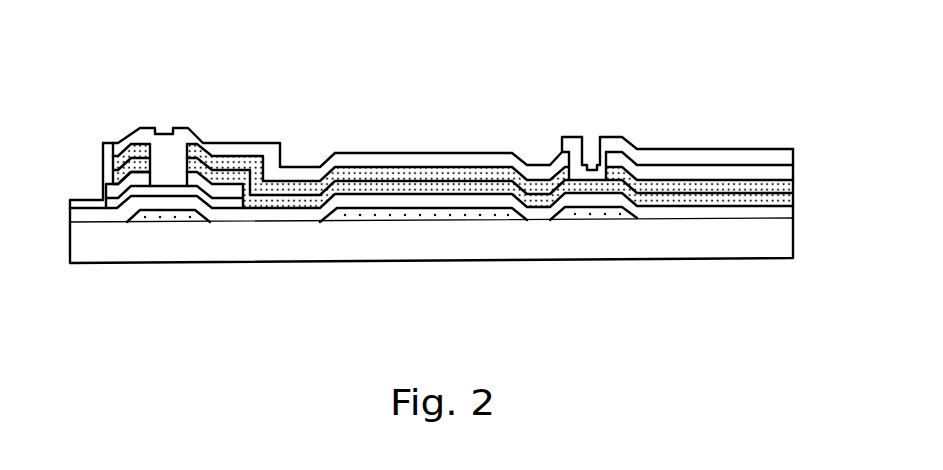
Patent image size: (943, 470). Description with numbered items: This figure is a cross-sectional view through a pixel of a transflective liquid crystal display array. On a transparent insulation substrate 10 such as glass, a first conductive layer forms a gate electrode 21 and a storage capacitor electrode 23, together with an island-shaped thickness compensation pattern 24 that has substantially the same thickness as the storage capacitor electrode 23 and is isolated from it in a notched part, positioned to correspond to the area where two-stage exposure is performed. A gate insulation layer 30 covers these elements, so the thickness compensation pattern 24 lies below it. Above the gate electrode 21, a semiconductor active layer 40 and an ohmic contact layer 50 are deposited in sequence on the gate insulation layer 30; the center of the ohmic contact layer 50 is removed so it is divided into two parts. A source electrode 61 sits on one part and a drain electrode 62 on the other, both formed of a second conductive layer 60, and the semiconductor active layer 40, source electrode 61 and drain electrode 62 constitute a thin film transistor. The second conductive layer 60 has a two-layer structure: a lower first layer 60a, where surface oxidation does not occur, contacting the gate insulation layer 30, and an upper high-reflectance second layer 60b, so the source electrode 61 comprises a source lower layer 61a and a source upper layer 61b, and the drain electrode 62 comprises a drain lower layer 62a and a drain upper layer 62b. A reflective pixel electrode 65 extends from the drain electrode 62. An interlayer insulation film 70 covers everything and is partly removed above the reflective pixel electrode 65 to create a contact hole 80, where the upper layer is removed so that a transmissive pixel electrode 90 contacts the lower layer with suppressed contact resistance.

The transparent insulation substrate 10 is at (510, 234).
The gate electrode 21 is at (172, 218).
The storage capacitor electrode 23 is at (422, 213).
The thickness compensation pattern 24 is at (598, 213).
The gate insulation layer 30 is at (650, 213).
The semiconductor active layer 40 is at (220, 203).
The ohmic contact layer 50 is at (100, 190).
The second conductive layer 60 is at (798, 172).
The first layer 60a is at (717, 207).
The second layer 60b is at (697, 182).
The source electrode 61 is at (108, 45).
The source lower layer 61a is at (116, 182).
The source upper layer 61b is at (135, 141).
The drain electrode 62 is at (288, 63).
The drain lower layer 62a is at (214, 166).
The drain upper layer 62b is at (190, 144).
The reflective pixel electrode 65 is at (382, 146).
The interlayer insulation film 70 is at (438, 160).
The contact hole 80 is at (591, 106).
The transmissive pixel electrode 90 is at (650, 151).